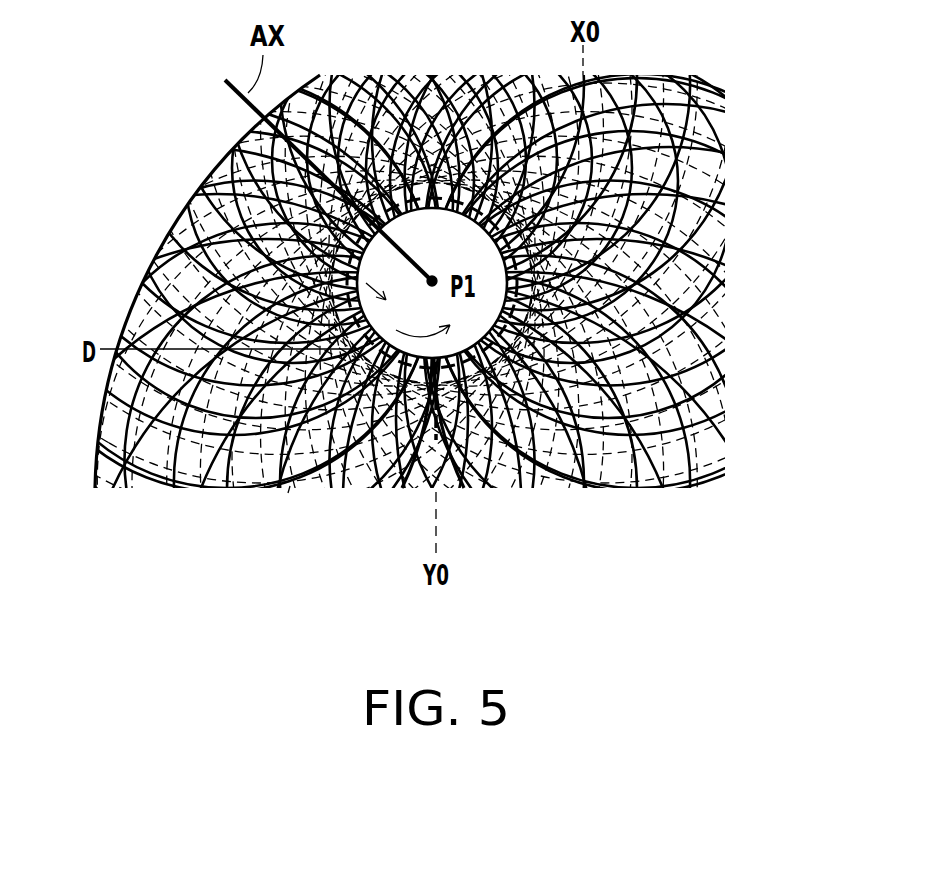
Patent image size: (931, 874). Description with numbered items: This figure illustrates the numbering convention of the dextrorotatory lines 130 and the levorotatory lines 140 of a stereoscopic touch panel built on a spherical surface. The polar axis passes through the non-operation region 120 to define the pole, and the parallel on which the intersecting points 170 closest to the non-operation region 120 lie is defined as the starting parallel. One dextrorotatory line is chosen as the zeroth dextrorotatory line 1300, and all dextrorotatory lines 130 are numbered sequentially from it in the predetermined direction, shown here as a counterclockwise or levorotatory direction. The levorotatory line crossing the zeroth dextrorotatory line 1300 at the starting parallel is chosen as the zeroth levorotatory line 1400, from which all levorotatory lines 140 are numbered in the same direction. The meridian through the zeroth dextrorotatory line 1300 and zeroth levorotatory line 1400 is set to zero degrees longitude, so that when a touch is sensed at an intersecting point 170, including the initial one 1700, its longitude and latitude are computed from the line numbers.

The non-operation region 120 is at (233, 147).
The dextrorotatory lines 130 is at (668, 388).
The levorotatory lines 140 is at (690, 455).
The zeroth dextrorotatory line 1300 is at (392, 490).
The zeroth levorotatory line 1400 is at (476, 494).
The initial reference curve 1700 is at (289, 495).
The intersecting points 170 is at (465, 433).